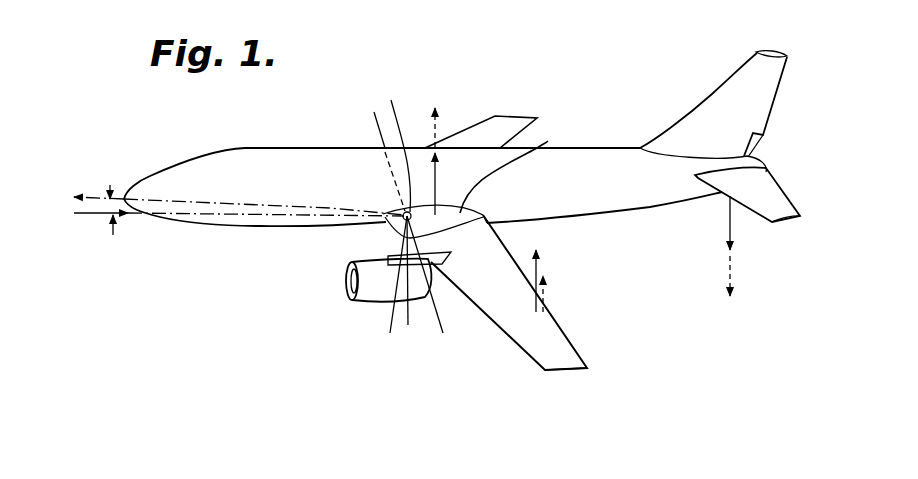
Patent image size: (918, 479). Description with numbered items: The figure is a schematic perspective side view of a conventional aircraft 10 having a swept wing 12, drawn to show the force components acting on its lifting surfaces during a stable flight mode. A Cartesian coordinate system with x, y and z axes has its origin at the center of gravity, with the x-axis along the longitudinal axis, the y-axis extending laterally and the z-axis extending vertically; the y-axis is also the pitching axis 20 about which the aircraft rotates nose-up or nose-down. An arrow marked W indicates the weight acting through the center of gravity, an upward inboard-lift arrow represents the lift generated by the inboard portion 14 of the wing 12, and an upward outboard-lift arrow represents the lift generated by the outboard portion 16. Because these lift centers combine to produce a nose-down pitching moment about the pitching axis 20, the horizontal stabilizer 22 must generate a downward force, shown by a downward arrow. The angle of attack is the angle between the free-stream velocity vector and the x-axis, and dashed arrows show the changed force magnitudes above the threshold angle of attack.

The aircraft 10 is at (365, 140).
The swept wing 12 is at (566, 374).
The inboard portion of wing 14 is at (549, 141).
The outboard portion of wing 16 is at (552, 337).
The pitching axis 20 is at (440, 327).
The horizontal stabilizer 22 is at (772, 188).